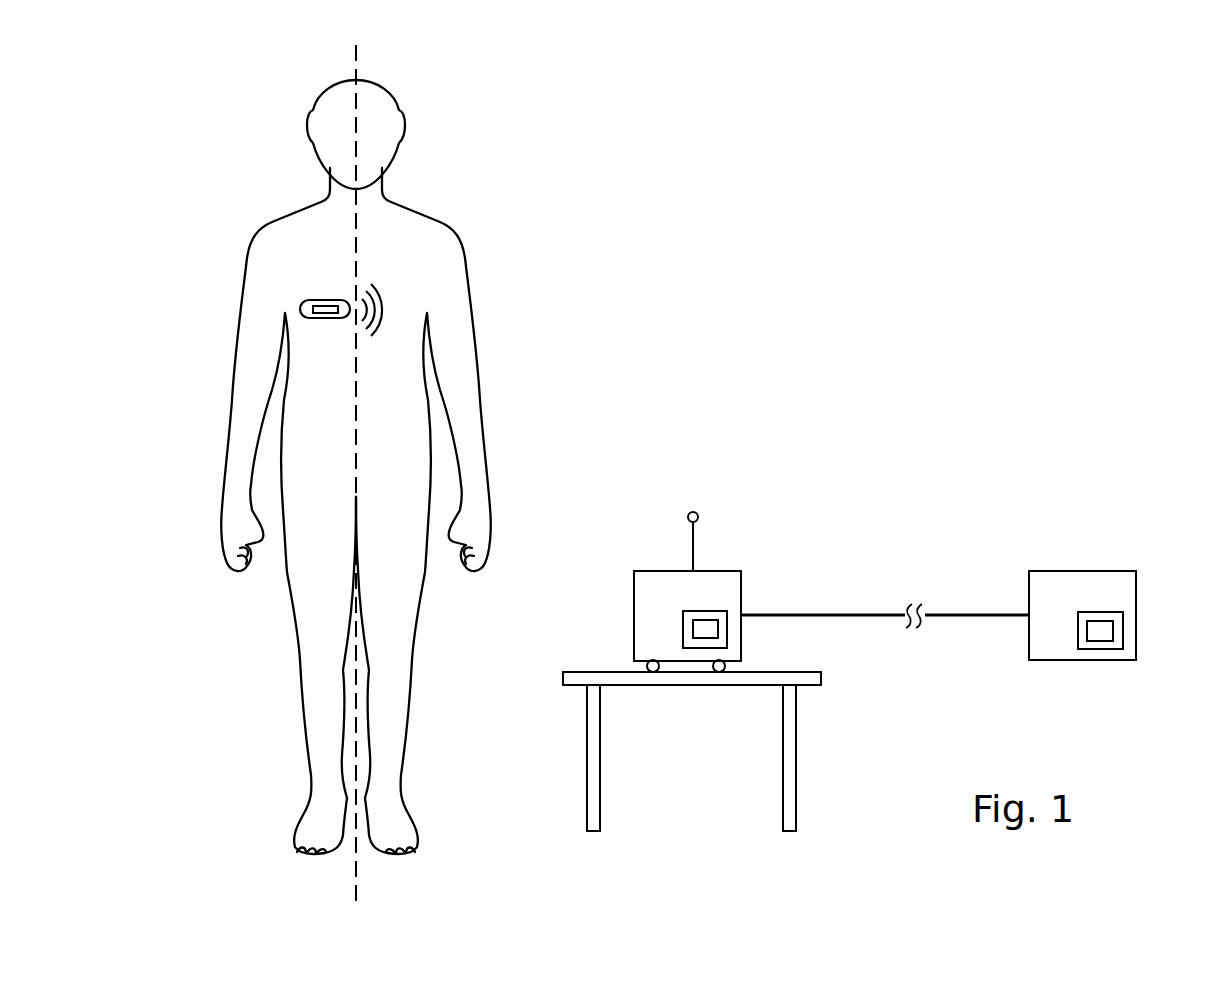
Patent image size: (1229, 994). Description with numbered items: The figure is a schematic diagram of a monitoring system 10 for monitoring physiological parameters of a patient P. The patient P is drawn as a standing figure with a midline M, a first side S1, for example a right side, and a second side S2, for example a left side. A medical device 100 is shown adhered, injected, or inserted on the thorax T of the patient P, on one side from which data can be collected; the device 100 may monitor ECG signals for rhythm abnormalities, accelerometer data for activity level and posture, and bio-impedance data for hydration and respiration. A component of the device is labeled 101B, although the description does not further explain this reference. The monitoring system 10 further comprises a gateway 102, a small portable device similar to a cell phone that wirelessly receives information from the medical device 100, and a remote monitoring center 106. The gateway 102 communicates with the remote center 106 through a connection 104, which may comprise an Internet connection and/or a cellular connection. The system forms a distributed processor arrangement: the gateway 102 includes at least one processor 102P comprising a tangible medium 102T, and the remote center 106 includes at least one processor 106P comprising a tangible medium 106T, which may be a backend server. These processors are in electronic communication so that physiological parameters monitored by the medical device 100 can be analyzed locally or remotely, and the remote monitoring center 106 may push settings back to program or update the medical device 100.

The monitoring system 10 is at (790, 195).
The patient P is at (258, 174).
The midline M is at (358, 50).
The first side S1 is at (252, 215).
The second side S2 is at (465, 200).
The thorax T is at (224, 282).
The medical device 100 is at (331, 295).
The housing / header of implantable device 101B is at (333, 318).
The gateway 102 is at (652, 571).
The processor 102P is at (729, 620).
The tangible medium 102T is at (719, 635).
The connection 104 is at (833, 614).
The remote monitoring center 106 is at (1127, 571).
The processor 106P is at (1125, 618).
The tangible medium 106T is at (1114, 635).